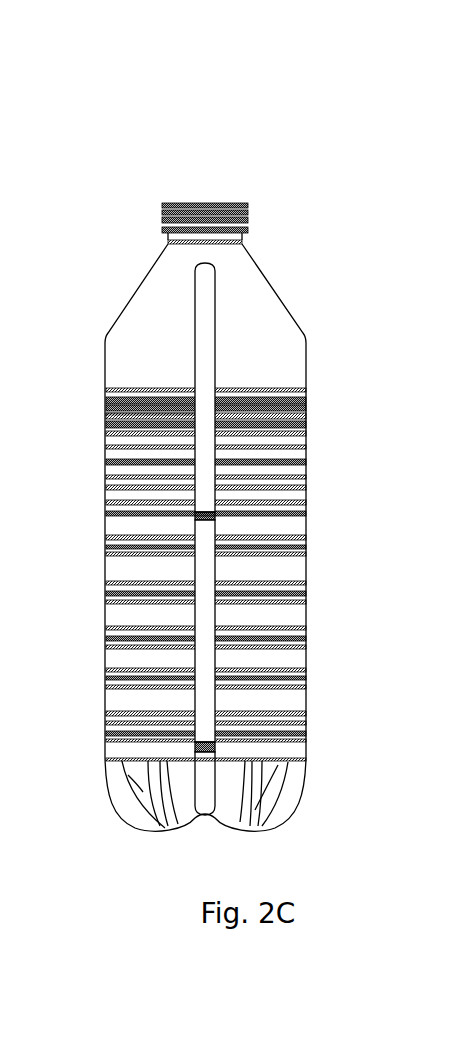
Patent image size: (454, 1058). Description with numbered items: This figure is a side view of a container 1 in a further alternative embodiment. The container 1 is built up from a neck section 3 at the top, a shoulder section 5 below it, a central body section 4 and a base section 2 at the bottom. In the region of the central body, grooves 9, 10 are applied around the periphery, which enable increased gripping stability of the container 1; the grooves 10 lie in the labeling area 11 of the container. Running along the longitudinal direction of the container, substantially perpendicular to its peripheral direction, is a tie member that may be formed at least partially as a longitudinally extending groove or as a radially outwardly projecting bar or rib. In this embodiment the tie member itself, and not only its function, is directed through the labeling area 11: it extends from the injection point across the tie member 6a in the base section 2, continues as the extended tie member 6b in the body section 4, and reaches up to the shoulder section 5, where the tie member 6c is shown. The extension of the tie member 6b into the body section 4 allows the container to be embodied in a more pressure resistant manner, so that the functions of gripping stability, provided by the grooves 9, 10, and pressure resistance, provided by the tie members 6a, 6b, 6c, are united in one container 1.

The container 1 is at (322, 192).
The base section 2 is at (322, 788).
The neck section 3 is at (245, 185).
The body section 4 is at (322, 595).
The shoulder section 5 is at (278, 272).
The tie member 6a is at (210, 775).
The tie member 6b is at (303, 519).
The tie member 6c is at (200, 347).
The groove 9 is at (303, 670).
The groove 10 is at (108, 412).
The labeling area 11 is at (312, 422).